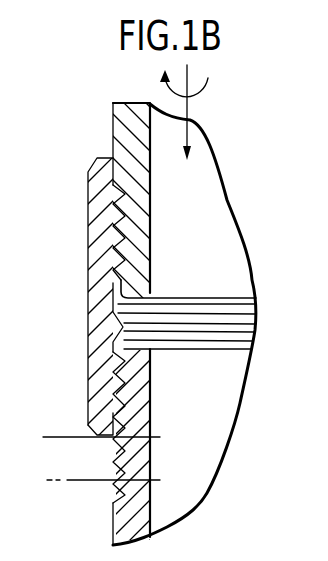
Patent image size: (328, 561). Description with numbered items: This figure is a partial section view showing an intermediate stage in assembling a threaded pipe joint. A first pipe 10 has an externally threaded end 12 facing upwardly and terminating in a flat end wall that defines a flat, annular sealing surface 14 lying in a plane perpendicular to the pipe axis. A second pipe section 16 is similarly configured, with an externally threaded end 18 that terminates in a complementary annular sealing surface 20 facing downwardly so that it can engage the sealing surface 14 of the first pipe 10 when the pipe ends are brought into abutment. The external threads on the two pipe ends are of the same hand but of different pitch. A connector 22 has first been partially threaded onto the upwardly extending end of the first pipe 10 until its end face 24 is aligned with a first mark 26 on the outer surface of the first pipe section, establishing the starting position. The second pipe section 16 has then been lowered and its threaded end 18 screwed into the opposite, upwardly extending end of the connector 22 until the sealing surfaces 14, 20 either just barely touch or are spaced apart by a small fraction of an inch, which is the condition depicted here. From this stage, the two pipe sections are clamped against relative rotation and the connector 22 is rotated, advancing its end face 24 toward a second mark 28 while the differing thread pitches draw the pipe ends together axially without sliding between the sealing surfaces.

The first pipe 10 is at (120, 525).
The externally threaded end 12 is at (125, 395).
The annular sealing surface 14 is at (217, 349).
The second pipe section 16 is at (122, 116).
The externally threaded end 18 is at (118, 242).
The annular sealing surface 20 is at (213, 295).
The connector 22 is at (95, 322).
The end face 24 is at (107, 440).
The first mark 26 is at (88, 437).
The second mark 28 is at (88, 480).